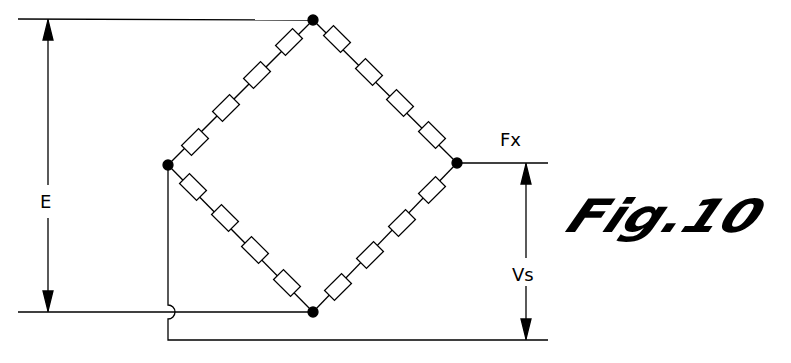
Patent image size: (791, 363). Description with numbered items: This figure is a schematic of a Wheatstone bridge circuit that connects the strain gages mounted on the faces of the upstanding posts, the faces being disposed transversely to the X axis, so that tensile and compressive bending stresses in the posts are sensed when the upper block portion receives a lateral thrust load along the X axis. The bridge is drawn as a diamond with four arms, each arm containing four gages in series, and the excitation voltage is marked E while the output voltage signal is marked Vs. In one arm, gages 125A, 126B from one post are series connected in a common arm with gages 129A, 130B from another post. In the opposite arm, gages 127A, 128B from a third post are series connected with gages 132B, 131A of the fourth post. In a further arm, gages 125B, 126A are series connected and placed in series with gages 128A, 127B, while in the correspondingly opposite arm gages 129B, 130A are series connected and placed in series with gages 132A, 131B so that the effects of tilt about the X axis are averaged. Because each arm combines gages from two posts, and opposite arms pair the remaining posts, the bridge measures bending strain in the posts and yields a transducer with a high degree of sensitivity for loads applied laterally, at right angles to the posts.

The strain gage 125A is at (283, 42).
The strain gage 125B is at (343, 43).
The strain gage 126A is at (373, 75).
The strain gage 126B is at (251, 74).
The strain gage 127A is at (436, 193).
The strain gage 127B is at (442, 134).
The strain gage 128A is at (404, 105).
The strain gage 128B is at (406, 225).
The strain gage 129A is at (220, 107).
The strain gage 129B is at (206, 180).
The strain gage 130A is at (213, 216).
The strain gage 130B is at (189, 140).
The strain gage 131A is at (344, 289).
The strain gage 131B is at (289, 290).
The strain gage 132A is at (245, 249).
The strain gage 132B is at (376, 257).